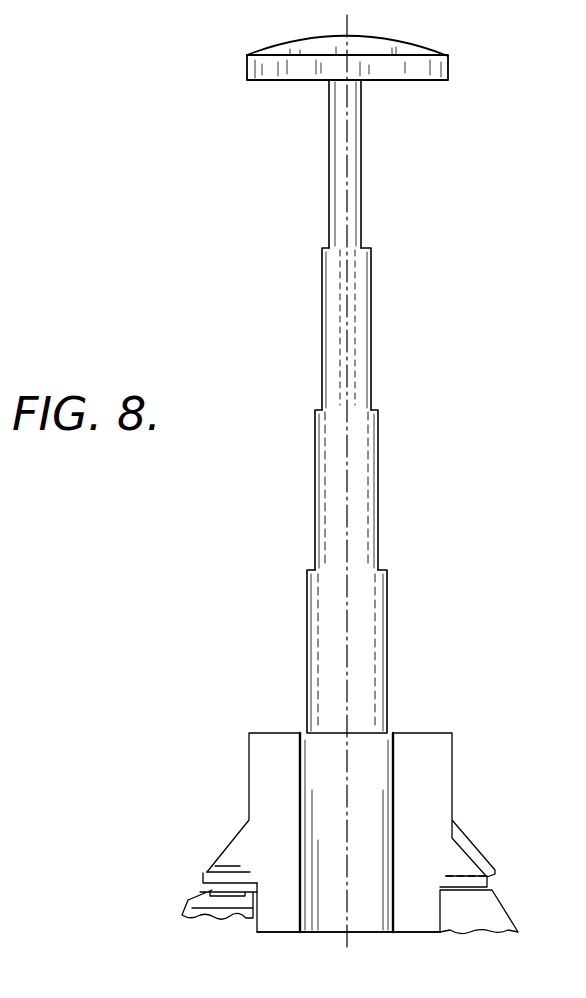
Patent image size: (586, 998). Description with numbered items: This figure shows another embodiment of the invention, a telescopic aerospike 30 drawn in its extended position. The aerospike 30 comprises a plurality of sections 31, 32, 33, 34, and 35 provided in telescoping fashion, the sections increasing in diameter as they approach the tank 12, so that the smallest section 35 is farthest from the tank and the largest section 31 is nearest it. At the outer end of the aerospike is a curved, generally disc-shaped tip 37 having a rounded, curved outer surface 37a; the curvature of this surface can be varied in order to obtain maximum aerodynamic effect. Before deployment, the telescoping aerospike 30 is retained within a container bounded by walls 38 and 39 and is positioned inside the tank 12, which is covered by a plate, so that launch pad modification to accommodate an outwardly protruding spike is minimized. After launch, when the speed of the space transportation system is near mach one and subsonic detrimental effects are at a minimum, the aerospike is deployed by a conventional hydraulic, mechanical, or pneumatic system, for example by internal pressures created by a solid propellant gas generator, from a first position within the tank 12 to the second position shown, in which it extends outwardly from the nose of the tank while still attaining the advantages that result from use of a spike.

The tank 12 is at (497, 912).
The aerospike 30 is at (412, 465).
The section 31 is at (394, 783).
The section 32 is at (388, 648).
The section 33 is at (379, 498).
The section 34 is at (372, 363).
The section 35 is at (362, 218).
The disc-shaped tip 37 is at (448, 73).
The curved outer surface 37a is at (427, 46).
The wall 38 is at (418, 933).
The wall 39 is at (452, 762).